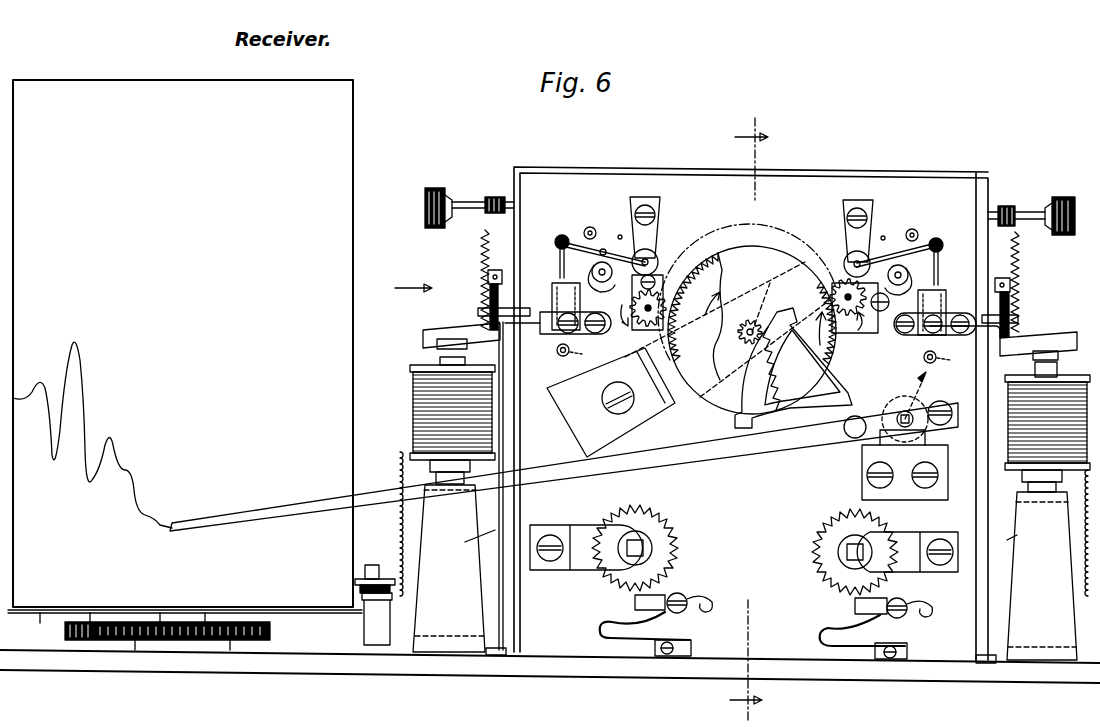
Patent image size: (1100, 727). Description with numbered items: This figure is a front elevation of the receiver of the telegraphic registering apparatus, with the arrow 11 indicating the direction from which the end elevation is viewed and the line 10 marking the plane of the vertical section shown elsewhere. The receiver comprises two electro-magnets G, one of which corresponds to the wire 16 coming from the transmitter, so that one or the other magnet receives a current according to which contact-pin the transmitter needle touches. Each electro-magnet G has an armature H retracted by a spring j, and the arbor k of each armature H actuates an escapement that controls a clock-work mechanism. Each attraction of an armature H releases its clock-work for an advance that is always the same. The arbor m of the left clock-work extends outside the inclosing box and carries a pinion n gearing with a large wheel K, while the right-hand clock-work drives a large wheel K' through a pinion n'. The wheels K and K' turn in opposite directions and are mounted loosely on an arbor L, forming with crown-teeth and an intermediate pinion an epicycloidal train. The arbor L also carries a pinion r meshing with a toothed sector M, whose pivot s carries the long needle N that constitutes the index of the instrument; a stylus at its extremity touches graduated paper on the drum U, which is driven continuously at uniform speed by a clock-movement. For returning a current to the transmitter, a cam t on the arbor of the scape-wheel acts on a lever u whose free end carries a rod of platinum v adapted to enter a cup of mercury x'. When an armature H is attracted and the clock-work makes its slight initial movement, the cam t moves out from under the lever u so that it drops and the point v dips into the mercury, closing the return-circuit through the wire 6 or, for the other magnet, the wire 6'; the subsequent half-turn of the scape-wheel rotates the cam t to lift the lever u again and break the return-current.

The drum U is at (185, 365).
The needle N is at (564, 463).
The pivot s is at (919, 395).
The section line 10 is at (749, 415).
The arrow 11 is at (412, 281).
The spring j is at (750, 262).
The armature H is at (750, 347).
The electro-magnet G is at (745, 512).
The wire 6 is at (1004, 543).
The wire 6' is at (474, 534).
The wire 16 is at (721, 548).
The lever u is at (750, 241).
The rod of platinum v is at (751, 260).
The cam t is at (756, 278).
The pinion n is at (643, 311).
The pinion n' is at (859, 313).
The arbor m is at (737, 300).
The cup of mercury x' is at (752, 310).
The arbor k is at (759, 357).
The arbor L is at (730, 319).
The large wheel K is at (695, 316).
The large wheel K' is at (818, 323).
The pinion r is at (745, 336).
The toothed sector M is at (793, 368).